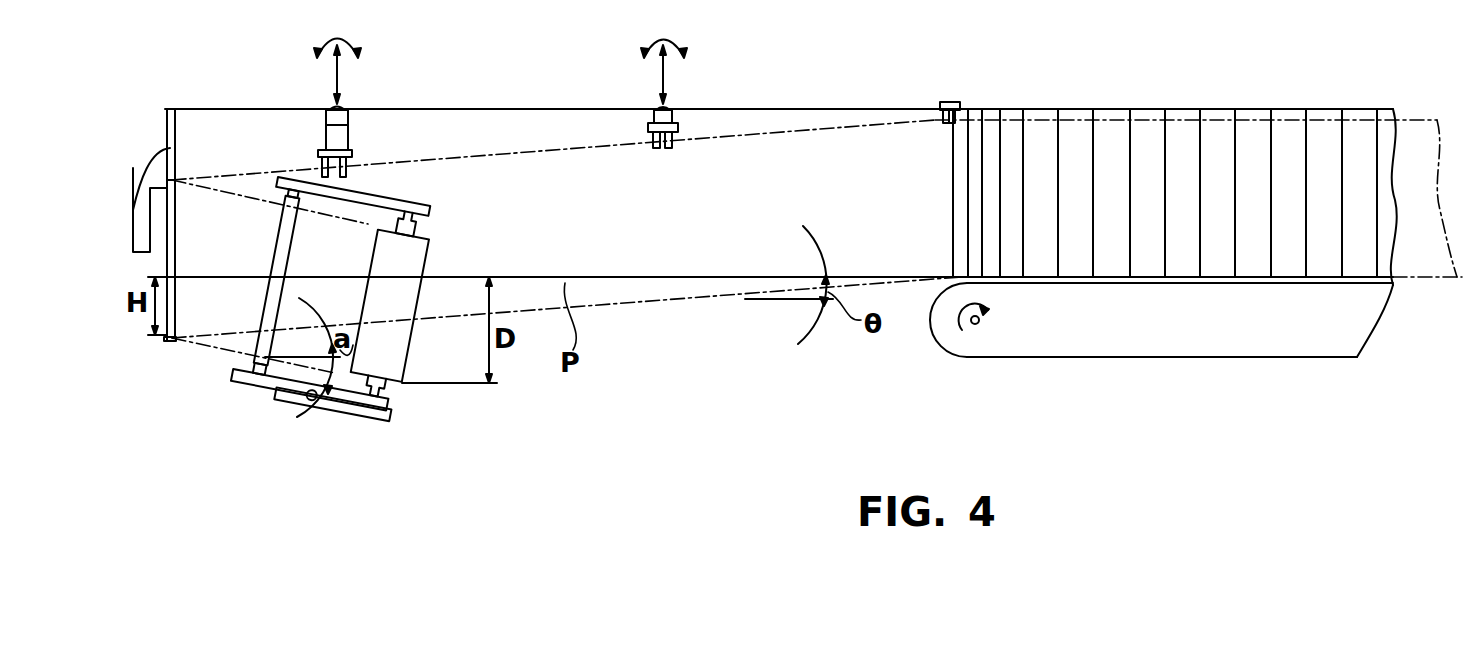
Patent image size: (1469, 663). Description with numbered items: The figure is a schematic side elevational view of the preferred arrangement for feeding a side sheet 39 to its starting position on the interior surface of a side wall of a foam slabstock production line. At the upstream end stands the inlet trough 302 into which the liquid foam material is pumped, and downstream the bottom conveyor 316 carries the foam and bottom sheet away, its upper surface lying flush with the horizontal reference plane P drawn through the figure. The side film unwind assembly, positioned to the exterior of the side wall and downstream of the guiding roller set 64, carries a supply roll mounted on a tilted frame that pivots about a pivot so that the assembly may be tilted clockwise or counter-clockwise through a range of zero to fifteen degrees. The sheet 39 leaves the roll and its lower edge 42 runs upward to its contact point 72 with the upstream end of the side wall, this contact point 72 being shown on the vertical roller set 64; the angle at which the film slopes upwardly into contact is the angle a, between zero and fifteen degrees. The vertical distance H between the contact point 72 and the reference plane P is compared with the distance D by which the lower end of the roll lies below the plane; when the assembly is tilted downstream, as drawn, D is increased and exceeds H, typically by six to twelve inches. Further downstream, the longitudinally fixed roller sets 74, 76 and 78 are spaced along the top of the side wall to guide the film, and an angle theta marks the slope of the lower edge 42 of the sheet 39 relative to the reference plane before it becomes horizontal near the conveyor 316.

The sheet 39 is at (1438, 200).
The lower edge 42 is at (683, 297).
The guiding roller set 64 is at (178, 257).
The contact point 72 is at (173, 343).
The roller set 74 is at (343, 109).
The roller set 76 is at (670, 109).
The roller set 78 is at (953, 102).
The inlet trough 302 is at (170, 148).
The bottom conveyor 316 is at (992, 348).